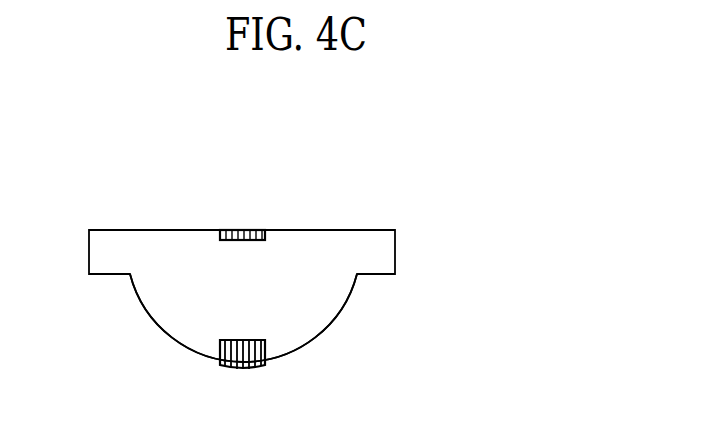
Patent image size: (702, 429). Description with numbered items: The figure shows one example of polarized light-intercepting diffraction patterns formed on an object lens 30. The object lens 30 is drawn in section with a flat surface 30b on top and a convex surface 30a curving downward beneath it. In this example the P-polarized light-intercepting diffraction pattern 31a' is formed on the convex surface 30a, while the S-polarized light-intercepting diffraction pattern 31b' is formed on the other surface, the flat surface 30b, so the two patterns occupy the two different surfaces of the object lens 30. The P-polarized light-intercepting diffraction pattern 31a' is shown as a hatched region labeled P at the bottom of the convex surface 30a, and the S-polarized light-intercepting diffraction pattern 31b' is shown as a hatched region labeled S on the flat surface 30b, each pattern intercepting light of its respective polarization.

The object lens 30 is at (421, 246).
The convex surface 30a is at (330, 332).
The flat surface 30b is at (347, 230).
The P-polarized light-intercepting diffraction pattern 31a' is at (170, 370).
The S-polarized light-intercepting diffraction pattern 31b' is at (200, 204).